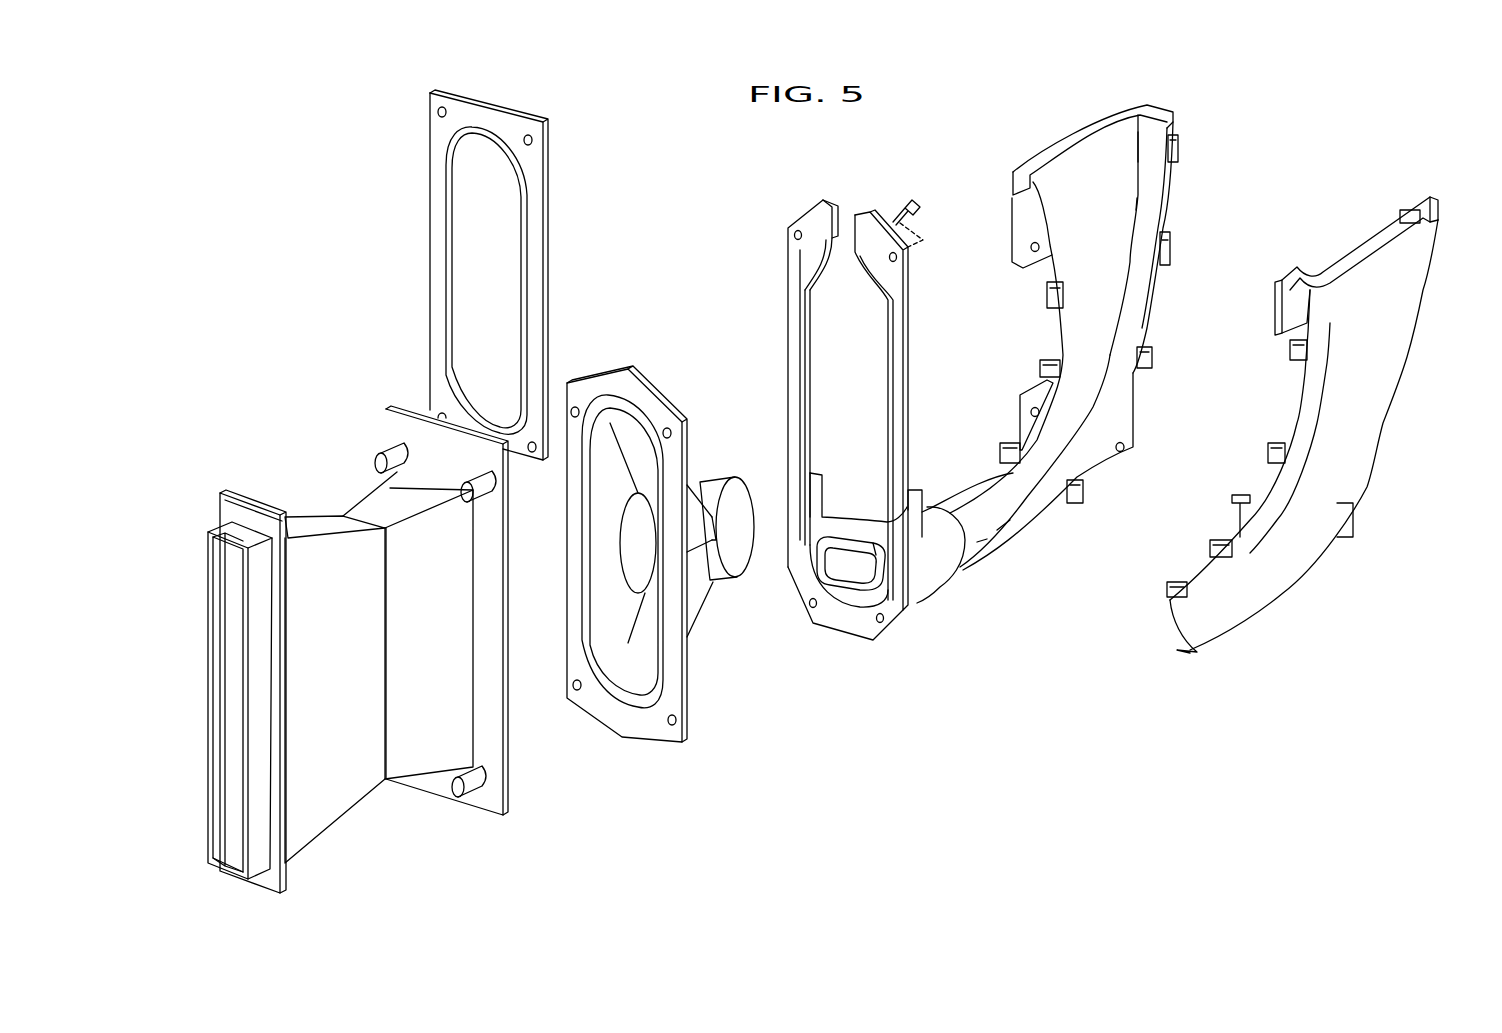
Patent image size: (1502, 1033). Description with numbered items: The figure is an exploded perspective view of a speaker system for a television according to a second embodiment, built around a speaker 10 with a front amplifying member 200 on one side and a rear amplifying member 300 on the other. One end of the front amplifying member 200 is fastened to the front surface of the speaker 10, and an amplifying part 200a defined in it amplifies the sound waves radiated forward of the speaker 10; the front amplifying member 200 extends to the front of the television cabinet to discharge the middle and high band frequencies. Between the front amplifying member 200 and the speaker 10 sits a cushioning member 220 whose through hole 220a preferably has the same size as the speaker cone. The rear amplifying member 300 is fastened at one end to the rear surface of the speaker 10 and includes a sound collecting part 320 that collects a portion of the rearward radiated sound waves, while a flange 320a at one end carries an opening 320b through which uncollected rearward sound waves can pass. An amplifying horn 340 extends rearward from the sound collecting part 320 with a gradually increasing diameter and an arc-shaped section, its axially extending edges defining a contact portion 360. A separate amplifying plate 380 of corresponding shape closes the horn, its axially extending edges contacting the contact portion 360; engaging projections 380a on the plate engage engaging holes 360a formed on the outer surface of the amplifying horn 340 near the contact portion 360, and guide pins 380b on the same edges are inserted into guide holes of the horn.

The speaker 10 is at (615, 668).
The front amplifying member 200 is at (337, 790).
The amplifying part 200a is at (232, 661).
The cushioning member 220 is at (484, 275).
The through hole 220a is at (447, 205).
The rear amplifying member 300 is at (937, 570).
The sound collecting part 320 is at (808, 457).
The flange 320a is at (793, 248).
The opening 320b is at (832, 305).
The amplifying horn 340 is at (1113, 319).
The contact portion 360 is at (1062, 318).
The engaging holes 360a is at (1172, 253).
The separate amplifying plate 380 is at (1322, 425).
The engaging projections 380a is at (1293, 350).
The guide pins 380b is at (1270, 313).